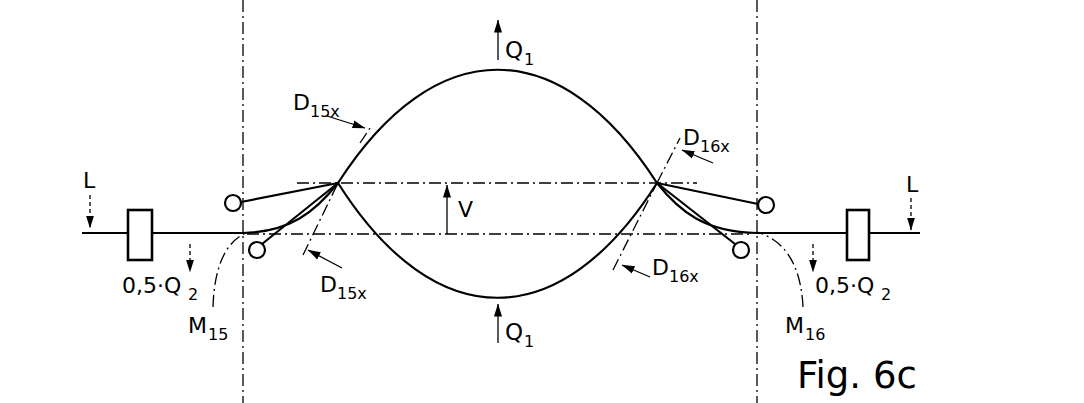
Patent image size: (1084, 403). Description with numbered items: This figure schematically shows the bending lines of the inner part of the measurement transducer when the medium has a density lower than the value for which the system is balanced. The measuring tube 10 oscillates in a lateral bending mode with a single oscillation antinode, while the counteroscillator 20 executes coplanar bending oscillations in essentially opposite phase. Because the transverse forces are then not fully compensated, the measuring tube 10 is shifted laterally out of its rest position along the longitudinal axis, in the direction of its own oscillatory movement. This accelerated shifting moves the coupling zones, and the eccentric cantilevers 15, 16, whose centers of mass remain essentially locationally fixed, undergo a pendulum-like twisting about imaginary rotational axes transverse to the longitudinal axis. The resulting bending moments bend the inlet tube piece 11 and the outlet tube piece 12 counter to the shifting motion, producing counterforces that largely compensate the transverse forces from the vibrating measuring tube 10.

The measuring tube 10 is at (413, 72).
The counteroscillator 20 is at (583, 288).
The outlet tube piece 12 is at (795, 222).
The inlet tube piece 11 is at (337, 178).
The cantilever 15 is at (263, 263).
The cantilever 16 is at (730, 260).